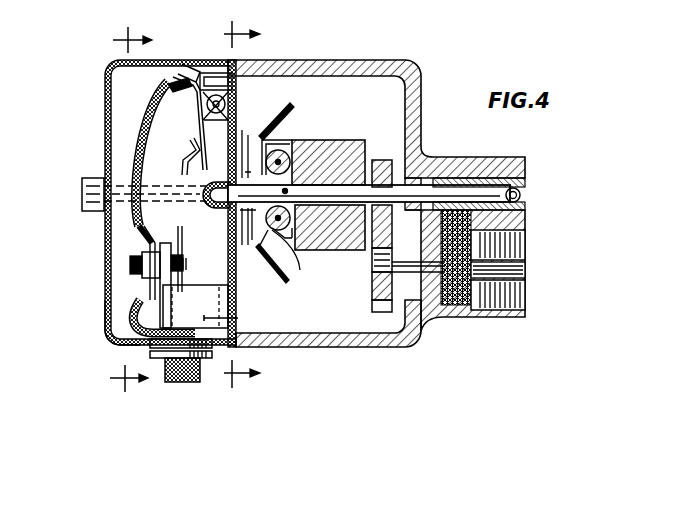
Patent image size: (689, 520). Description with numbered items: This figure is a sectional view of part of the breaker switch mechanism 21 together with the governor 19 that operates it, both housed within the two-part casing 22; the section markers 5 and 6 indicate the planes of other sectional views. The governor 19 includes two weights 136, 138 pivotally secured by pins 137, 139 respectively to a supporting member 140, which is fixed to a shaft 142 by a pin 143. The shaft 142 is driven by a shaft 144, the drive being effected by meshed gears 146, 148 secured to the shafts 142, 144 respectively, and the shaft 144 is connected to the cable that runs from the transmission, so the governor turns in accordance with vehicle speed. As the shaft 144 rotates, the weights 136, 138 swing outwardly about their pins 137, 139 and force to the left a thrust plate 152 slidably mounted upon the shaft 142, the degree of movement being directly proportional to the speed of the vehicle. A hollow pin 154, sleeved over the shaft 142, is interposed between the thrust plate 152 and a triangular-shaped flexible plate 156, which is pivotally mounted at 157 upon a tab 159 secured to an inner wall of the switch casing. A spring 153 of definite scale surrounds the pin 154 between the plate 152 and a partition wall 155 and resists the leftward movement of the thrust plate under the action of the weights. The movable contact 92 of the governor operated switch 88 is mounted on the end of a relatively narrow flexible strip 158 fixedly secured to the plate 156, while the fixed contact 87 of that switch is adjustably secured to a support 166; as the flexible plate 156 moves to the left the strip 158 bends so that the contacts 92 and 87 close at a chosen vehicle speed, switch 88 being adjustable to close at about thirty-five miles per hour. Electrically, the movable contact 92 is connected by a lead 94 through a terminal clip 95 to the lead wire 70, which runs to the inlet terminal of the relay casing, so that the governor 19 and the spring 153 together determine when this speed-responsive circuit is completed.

The governor 19 is at (340, 348).
The breaker switch mechanism 21 is at (122, 311).
The two-part casing 22 is at (334, 64).
The section line 5 is at (249, 205).
The section line 6 is at (138, 212).
The lead wire 70 is at (130, 326).
The fixed contact 87 is at (166, 252).
The governor operated switch 88 is at (178, 280).
The movable contact 92 is at (186, 263).
The lead 94 is at (140, 128).
The terminal clip 95 is at (140, 232).
The weight 136 is at (349, 150).
The pin 137 is at (286, 160).
The weight 138 is at (349, 250).
The pin 139 is at (300, 270).
The supporting member 140 is at (266, 252).
The shaft 142 is at (452, 192).
The pin 143 is at (292, 238).
The shaft 144 is at (443, 275).
The gear 146 is at (421, 162).
The gear 148 is at (373, 294).
The thrust plate 152 is at (276, 108).
The spring 153 is at (256, 235).
The hollow pin 154 is at (260, 144).
The partition wall 155 is at (213, 125).
The triangular-shaped flexible plate 156 is at (190, 150).
The pivot 157 is at (199, 90).
The flexible strip 158 is at (135, 168).
The tab 159 is at (216, 92).
The support 166 is at (238, 320).